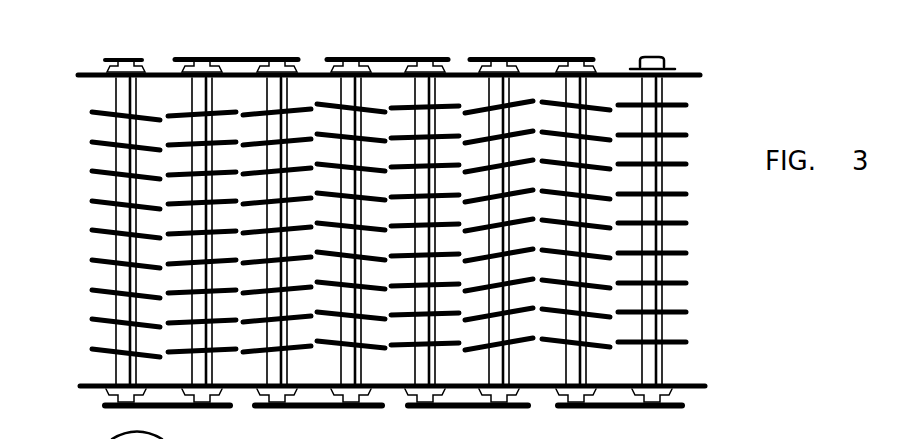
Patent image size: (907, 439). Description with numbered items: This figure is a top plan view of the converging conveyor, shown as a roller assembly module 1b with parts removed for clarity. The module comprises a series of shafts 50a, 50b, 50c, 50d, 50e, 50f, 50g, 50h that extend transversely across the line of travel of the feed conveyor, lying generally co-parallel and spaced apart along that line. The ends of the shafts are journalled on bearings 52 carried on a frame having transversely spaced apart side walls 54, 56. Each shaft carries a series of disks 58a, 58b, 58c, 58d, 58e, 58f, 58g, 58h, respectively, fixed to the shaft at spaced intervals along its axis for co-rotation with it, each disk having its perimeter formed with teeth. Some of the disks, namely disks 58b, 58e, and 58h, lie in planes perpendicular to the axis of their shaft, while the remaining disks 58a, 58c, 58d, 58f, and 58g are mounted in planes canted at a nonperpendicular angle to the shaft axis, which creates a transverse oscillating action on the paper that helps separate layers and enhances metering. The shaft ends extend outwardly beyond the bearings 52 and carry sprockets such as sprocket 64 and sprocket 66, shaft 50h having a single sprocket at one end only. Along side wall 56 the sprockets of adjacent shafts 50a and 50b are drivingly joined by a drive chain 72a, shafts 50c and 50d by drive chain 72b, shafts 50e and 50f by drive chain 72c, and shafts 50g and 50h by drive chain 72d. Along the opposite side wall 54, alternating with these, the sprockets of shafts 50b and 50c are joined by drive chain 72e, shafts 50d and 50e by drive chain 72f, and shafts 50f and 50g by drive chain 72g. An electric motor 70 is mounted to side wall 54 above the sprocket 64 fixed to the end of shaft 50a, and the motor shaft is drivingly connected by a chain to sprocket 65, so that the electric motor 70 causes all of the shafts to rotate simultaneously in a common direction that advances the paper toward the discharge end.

The roller assembly module 1b is at (703, 243).
The shaft 50a is at (112, 100).
The shaft 50b is at (213, 346).
The shaft 50c is at (287, 341).
The shaft 50d is at (363, 343).
The shaft 50e is at (438, 343).
The shaft 50f is at (512, 339).
The shaft 50g is at (589, 338).
The shaft 50h is at (665, 277).
The bearings 52 is at (108, 76).
The side wall 54 is at (690, 72).
The side wall 56 is at (705, 386).
The disks 58a is at (93, 143).
The disks 58b is at (210, 141).
The disks 58c is at (288, 168).
The disks 58d is at (366, 140).
The disks 58e is at (442, 166).
The disks 58f is at (516, 139).
The disks 58g is at (594, 164).
The disks 58h is at (690, 314).
The sprocket 64 is at (343, 57).
The sprocket 65 is at (122, 58).
The sprocket 66 is at (594, 412).
The electric motor 70 is at (112, 438).
The drive chain 72a is at (165, 410).
The drive chain 72b is at (312, 410).
The drive chain 72c is at (450, 410).
The drive chain 72d is at (635, 410).
The drive chain 72e is at (215, 57).
The drive chain 72f is at (400, 57).
The drive chain 72g is at (538, 57).